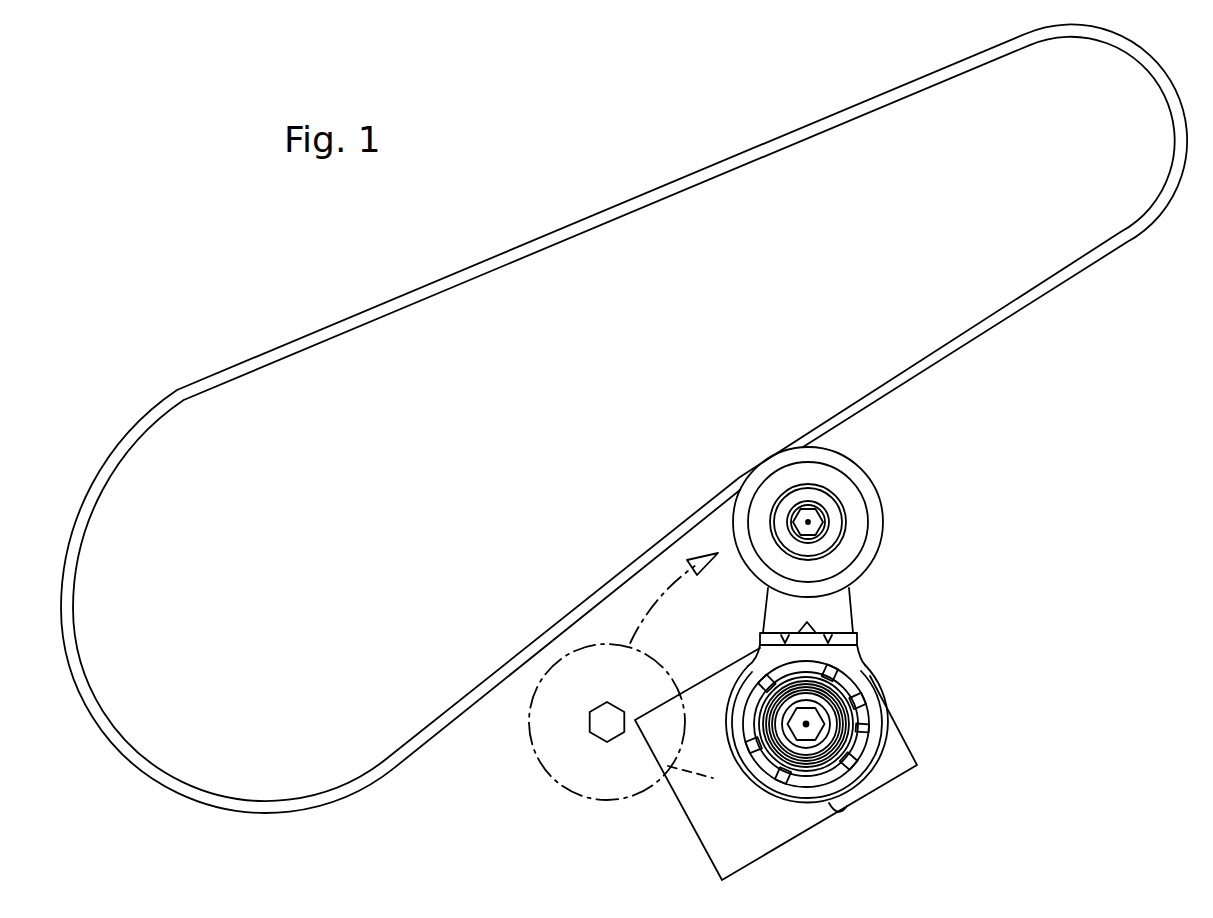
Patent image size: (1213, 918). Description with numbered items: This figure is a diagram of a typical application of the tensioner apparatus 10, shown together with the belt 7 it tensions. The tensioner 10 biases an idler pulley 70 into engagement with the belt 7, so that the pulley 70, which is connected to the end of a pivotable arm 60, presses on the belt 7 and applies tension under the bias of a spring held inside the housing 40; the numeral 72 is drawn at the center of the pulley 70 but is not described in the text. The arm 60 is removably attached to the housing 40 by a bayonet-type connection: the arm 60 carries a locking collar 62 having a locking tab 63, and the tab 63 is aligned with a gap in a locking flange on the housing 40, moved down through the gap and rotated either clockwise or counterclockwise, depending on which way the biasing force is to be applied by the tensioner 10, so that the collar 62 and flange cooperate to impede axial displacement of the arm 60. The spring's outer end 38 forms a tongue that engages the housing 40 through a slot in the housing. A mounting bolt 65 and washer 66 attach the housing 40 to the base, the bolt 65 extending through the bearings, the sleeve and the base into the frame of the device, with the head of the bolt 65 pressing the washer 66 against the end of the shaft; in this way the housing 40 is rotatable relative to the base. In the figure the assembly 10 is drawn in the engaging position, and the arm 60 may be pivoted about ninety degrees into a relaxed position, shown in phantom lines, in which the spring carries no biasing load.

The belt 7 is at (931, 359).
The tensioner apparatus 10 is at (905, 490).
The idler pulley 70 is at (873, 548).
The pulley bearing bolt 72 is at (800, 523).
The pivotable arm 60 is at (837, 610).
The housing 40 is at (875, 683).
The locking tab 63 is at (760, 727).
The locking collar 62 is at (852, 757).
The washer 66 is at (823, 732).
The outer end of the spring 38 is at (837, 815).
The mounting bolt 65 is at (807, 727).